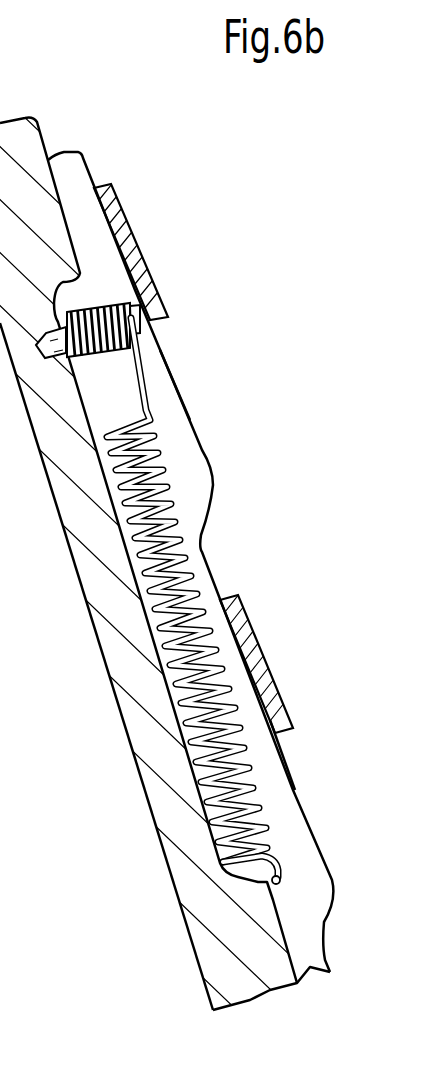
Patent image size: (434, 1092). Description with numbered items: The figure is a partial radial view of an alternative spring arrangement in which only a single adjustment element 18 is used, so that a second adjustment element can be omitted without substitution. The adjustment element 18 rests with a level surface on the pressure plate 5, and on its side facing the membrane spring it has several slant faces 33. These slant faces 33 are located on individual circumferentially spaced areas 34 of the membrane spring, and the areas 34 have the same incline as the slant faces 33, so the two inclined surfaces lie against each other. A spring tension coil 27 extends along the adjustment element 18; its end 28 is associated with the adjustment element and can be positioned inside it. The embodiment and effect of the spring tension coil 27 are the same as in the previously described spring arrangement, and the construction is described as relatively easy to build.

The pressure plate 5 is at (15, 137).
The adjustment element 18 is at (203, 482).
The spring tension coil 27 is at (257, 808).
The end of the spring tension coil 28 is at (283, 878).
The slant faces 33 is at (188, 382).
The circumferentially spaced areas 34 is at (117, 197).